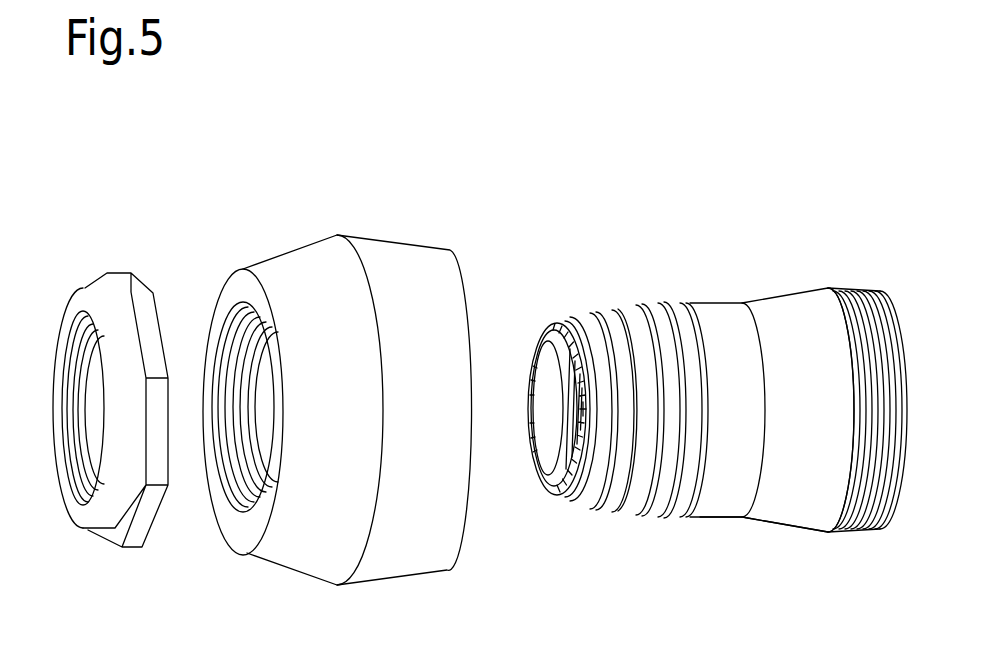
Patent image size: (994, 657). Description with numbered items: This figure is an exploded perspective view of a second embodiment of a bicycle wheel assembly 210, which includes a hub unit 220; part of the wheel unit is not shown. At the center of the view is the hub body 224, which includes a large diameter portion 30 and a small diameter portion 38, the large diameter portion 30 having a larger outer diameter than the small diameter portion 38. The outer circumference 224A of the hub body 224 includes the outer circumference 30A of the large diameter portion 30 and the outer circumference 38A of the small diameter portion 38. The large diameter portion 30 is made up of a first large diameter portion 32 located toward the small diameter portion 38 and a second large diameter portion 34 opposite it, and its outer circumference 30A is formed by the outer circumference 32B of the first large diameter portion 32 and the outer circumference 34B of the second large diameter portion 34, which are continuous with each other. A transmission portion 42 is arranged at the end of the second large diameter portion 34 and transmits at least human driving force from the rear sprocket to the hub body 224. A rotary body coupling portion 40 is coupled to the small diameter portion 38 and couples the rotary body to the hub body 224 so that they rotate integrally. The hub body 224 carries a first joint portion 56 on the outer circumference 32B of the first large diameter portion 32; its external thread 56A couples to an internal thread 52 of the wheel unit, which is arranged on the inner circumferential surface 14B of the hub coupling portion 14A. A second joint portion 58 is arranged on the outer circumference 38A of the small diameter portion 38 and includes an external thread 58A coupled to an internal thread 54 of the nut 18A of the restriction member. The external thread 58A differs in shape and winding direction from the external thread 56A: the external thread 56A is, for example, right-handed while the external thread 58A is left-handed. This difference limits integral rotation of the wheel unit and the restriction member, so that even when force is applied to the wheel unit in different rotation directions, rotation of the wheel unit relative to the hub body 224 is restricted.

The nut 18A is at (97, 379).
The internal thread 54 is at (88, 500).
The hub coupling portion 14A is at (326, 382).
The inner circumferential surface 14B is at (229, 410).
The internal thread 52 is at (248, 493).
The bicycle wheel assembly 210 is at (702, 359).
The hub unit 220 is at (702, 402).
The rotary body coupling portion 40 is at (548, 372).
The second joint portion 58 is at (566, 288).
The external thread 58A is at (606, 313).
The small diameter portion 38 is at (625, 400).
The outer circumference 38A is at (630, 516).
The first joint portion 56 is at (665, 365).
The external thread 56A is at (657, 302).
The large diameter portion 30 is at (772, 366).
The first large diameter portion 32 is at (718, 302).
The second large diameter portion 34 is at (775, 297).
The outer circumference 30A is at (753, 574).
The outer circumference 32B is at (713, 518).
The outer circumference 34B is at (772, 524).
The transmission portion 42 is at (860, 291).
The hub body 224 is at (859, 425).
The flange front face 224A is at (812, 556).